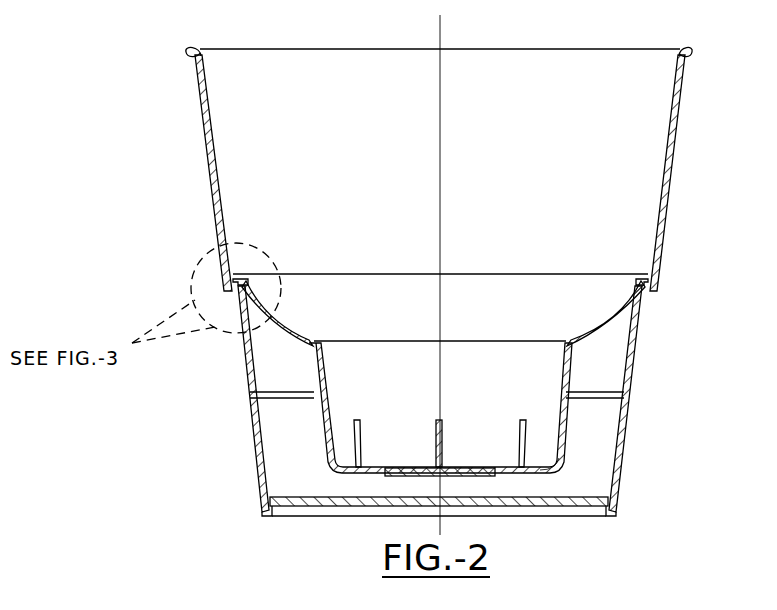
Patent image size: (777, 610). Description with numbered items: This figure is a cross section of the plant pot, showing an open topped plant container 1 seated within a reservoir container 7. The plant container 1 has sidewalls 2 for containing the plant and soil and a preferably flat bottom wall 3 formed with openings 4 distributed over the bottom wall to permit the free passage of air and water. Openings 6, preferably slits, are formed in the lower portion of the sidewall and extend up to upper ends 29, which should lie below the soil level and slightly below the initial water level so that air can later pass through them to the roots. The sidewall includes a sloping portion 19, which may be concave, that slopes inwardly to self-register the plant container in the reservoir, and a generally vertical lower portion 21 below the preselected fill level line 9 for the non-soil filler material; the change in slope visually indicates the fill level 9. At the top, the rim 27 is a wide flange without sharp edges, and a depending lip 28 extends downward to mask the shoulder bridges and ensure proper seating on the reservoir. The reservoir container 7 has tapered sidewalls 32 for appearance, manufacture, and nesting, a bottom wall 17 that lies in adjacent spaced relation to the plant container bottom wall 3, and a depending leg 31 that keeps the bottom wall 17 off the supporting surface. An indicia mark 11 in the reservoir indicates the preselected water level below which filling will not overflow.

The plant container 1 is at (459, 156).
The sidewalls 2 is at (680, 173).
The rim 27 is at (705, 39).
The depending lip 28 is at (673, 286).
The sloping portion of sidewall 19 is at (471, 387).
The preselected fill level line 9 is at (444, 399).
The lower portion of sidewall 21 is at (282, 380).
The indicia mark 11 is at (616, 380).
The openings 6 is at (440, 429).
The upper ends of slits 29 is at (456, 429).
The bottom wall 3 is at (440, 458).
The openings 4 is at (559, 479).
The reservoir container 7 is at (457, 422).
The sidewalls of reservoir container 32 is at (476, 495).
The depending leg 31 is at (253, 532).
The bottom wall of reservoir container 17 is at (439, 525).